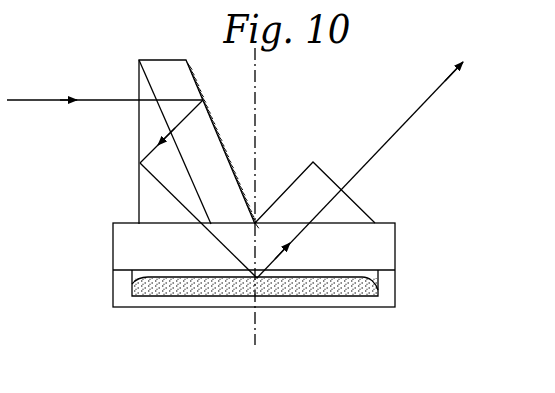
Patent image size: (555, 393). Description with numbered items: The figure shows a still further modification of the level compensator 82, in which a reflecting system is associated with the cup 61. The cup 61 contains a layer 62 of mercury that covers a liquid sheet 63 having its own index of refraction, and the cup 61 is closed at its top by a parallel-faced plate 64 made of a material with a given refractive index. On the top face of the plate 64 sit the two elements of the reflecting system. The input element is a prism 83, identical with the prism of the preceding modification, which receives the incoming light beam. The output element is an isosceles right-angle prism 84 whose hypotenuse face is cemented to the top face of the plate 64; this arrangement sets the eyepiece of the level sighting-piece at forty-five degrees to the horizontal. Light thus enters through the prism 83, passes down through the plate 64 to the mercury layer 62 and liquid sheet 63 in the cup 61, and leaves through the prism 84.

The compensator 82 is at (300, 150).
The prism 83 is at (200, 128).
The isosceles right-angle prism 84 is at (318, 168).
The parallel-faced plate 64 is at (383, 257).
The cup 61 is at (380, 290).
The layer of mercury 62 is at (308, 288).
The liquid sheet 63 is at (182, 276).